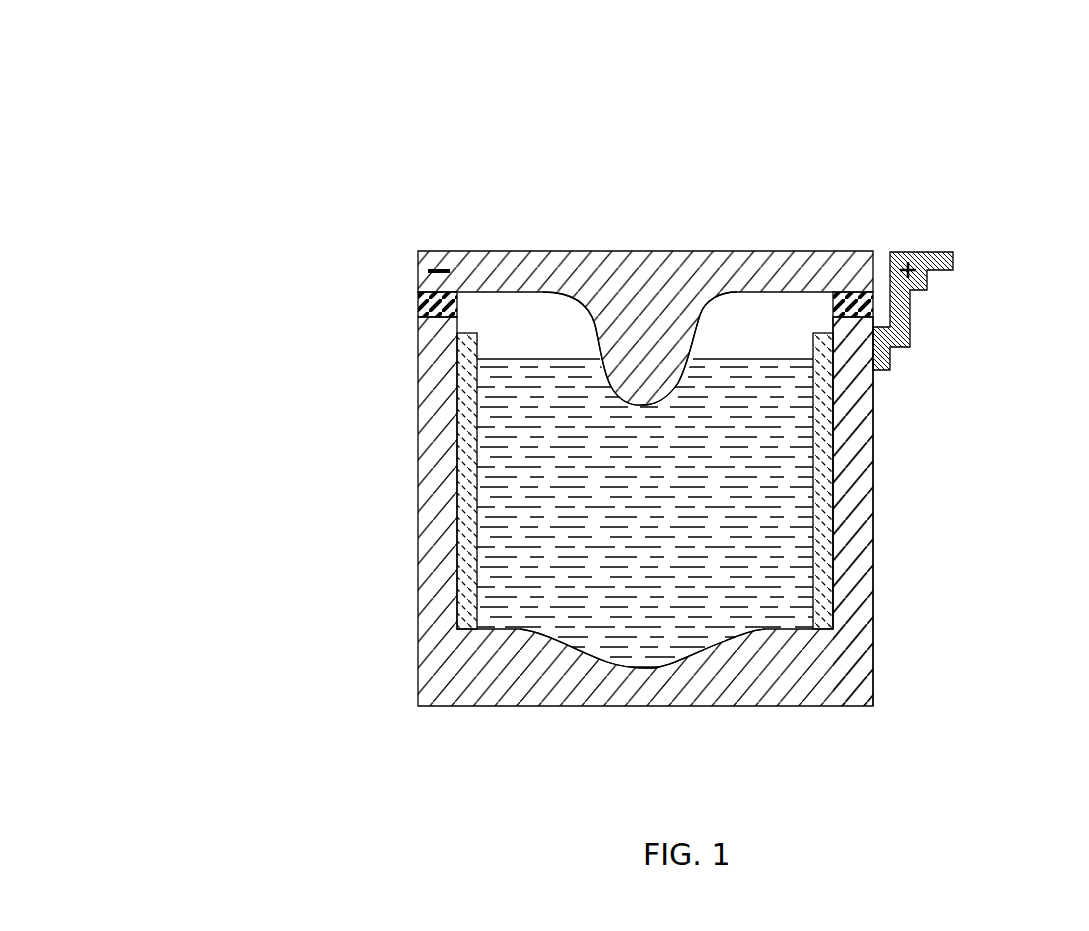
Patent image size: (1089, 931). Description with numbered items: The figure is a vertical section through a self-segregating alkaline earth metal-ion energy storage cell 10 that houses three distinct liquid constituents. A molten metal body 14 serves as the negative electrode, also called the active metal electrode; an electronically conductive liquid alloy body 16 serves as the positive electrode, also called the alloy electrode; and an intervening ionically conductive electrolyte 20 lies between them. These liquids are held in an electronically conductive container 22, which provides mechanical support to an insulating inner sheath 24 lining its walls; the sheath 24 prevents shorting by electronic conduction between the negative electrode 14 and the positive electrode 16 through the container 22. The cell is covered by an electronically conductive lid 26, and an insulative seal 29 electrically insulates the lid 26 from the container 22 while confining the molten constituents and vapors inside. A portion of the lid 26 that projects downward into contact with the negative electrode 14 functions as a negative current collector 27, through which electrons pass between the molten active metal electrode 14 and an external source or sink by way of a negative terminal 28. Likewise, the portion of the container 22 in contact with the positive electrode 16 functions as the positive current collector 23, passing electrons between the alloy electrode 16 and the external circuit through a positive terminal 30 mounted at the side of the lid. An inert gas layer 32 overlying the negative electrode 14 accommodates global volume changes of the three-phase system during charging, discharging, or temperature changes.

The alkaline earth metal ion energy storage cell 10 is at (350, 136).
The molten metal body 14 is at (495, 392).
The electronically conductive liquid alloy body 16 is at (503, 577).
The ionically conductive electrolyte 20 is at (495, 478).
The electronically conductive container 22 is at (843, 670).
The positive current collector 23 is at (647, 668).
The insulating inner sheath 24 is at (825, 562).
The electronically conductive lid 26 is at (628, 255).
The negative current collector 27 is at (648, 370).
The negative terminal 28 is at (418, 260).
The insulative seal 29 is at (420, 297).
The positive terminal 30 is at (917, 252).
The inert gas layer 32 is at (768, 310).